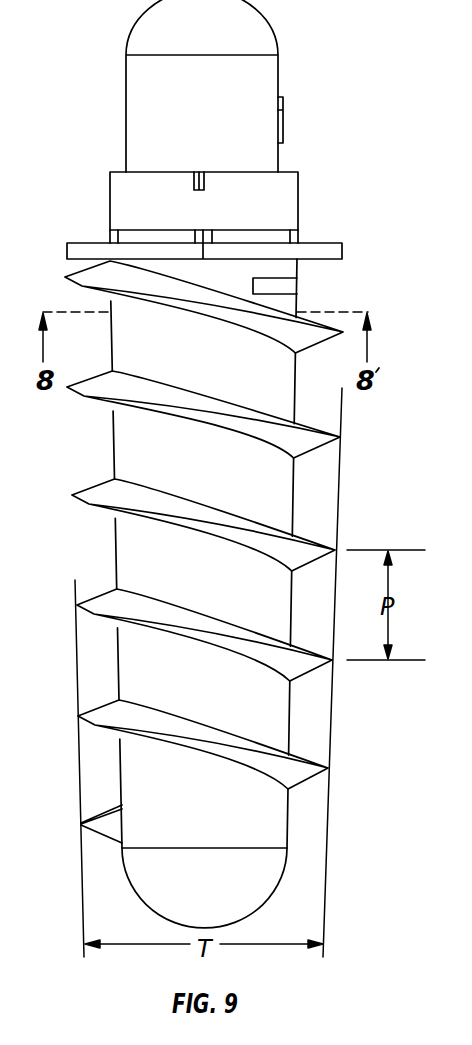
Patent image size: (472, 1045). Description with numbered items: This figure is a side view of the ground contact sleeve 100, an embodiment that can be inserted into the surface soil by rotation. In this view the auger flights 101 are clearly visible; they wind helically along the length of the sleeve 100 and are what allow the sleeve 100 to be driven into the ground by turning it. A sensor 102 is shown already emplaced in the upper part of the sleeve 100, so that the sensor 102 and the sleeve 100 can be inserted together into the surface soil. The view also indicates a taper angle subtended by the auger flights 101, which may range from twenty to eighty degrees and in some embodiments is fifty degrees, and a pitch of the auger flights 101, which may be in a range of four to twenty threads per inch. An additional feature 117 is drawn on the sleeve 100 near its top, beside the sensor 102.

The ground contact sleeve 100 is at (249, 464).
The auger flights 101 is at (73, 497).
The sensor 102 is at (235, 88).
The coupling box 117 is at (288, 286).